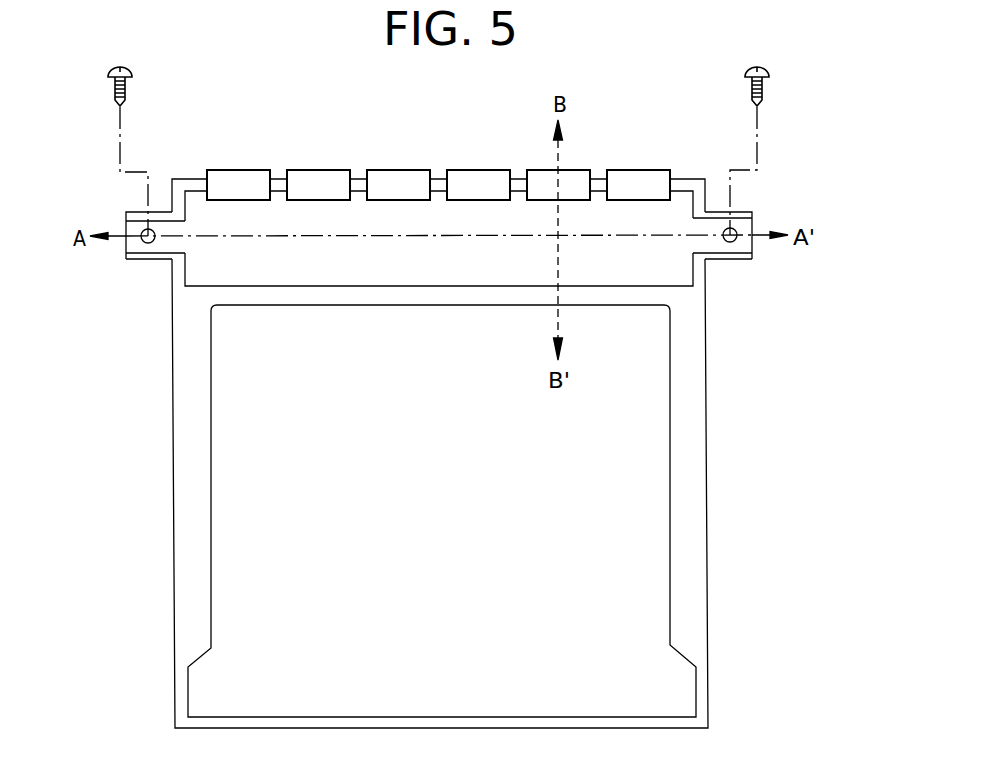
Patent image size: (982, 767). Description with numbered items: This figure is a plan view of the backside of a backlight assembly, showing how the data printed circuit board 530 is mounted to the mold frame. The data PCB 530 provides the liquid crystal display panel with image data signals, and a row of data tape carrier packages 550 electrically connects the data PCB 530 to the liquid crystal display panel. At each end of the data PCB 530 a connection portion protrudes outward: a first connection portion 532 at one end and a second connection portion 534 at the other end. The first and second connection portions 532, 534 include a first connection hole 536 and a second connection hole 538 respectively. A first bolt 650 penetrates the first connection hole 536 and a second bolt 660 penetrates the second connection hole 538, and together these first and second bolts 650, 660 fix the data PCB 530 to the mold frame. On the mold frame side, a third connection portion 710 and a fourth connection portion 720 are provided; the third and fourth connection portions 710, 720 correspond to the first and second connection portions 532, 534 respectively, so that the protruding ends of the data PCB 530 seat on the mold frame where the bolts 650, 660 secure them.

The data printed circuit board 530 is at (677, 216).
The first connection portion 532 is at (128, 222).
The second connection portion 534 is at (752, 224).
The first connection hole 536 is at (142, 242).
The second connection hole 538 is at (736, 241).
The data tape carrier package 550 is at (630, 180).
The first bolt 650 is at (113, 89).
The second bolt 660 is at (763, 88).
The third connection portion 710 is at (145, 260).
The fourth connection portion 720 is at (737, 258).